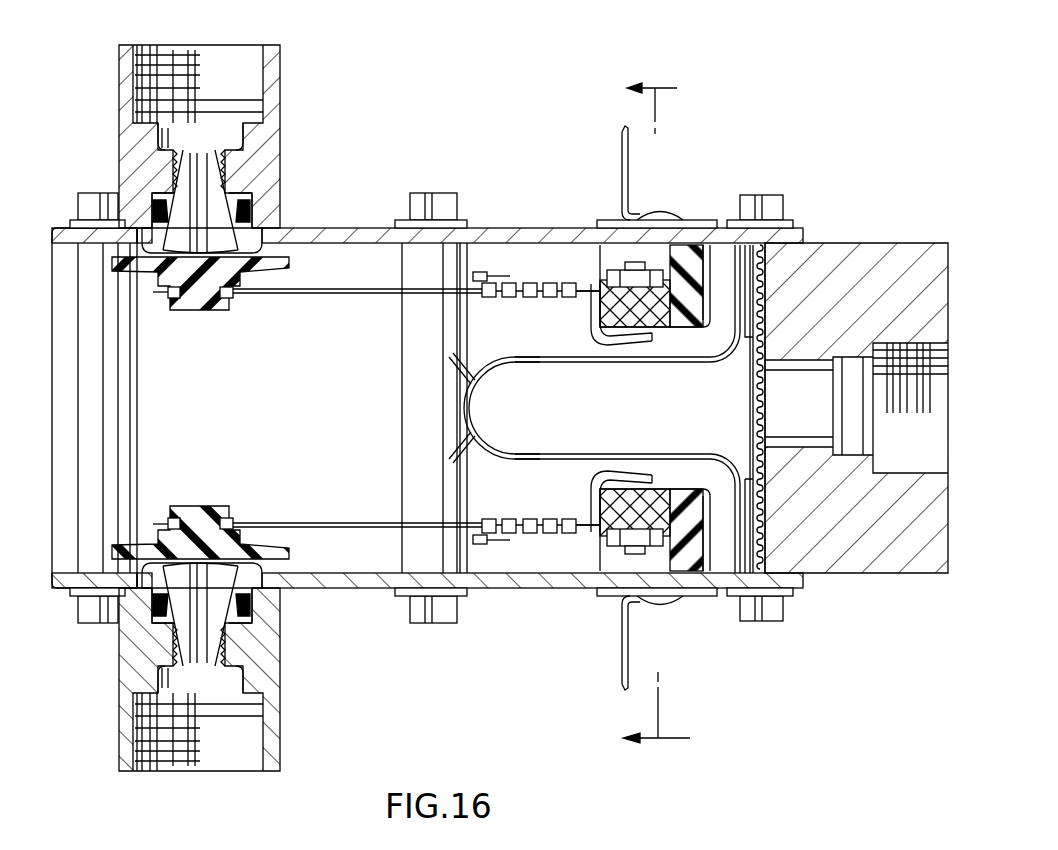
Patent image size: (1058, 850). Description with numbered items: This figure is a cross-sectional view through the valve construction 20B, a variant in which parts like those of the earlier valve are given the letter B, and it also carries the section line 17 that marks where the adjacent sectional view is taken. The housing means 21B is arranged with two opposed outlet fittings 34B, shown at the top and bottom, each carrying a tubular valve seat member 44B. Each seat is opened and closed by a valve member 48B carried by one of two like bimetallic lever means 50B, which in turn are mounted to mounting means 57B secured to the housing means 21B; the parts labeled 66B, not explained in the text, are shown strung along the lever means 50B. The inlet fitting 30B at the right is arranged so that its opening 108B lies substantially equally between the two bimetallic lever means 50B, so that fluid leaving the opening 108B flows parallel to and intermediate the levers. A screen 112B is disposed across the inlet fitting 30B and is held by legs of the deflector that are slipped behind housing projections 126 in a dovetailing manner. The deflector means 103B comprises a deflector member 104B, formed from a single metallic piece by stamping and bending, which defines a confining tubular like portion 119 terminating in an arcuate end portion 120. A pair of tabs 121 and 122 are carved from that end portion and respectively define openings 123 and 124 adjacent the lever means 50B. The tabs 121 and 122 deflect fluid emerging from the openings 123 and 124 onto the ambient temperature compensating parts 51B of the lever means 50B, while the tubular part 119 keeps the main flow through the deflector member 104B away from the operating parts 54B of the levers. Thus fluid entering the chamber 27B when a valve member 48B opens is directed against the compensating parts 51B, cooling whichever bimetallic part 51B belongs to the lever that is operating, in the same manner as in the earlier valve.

The valve construction 20B is at (806, 146).
The housing means 21B is at (353, 590).
The chamber 27B is at (285, 403).
The inlet fitting 30B is at (886, 250).
The outlet fittings 34B is at (276, 137).
The tubular valve seat members 44B is at (253, 220).
The valve members 48B is at (290, 266).
The bimetallic lever means 50B is at (362, 300).
The ambient temperature compensating parts 51B is at (283, 300).
The operating parts 54B is at (540, 283).
The mounting means 57B is at (694, 245).
The insulating beads 66B is at (532, 276).
The deflector means 103B is at (563, 343).
The deflector member 104B is at (562, 460).
The opening 108B is at (763, 388).
The screen 112B is at (772, 272).
The tubular like portion 119 is at (543, 364).
The arcuate end portion 120 is at (467, 405).
The tab 121 is at (457, 367).
The tab 122 is at (457, 436).
The opening 123 is at (493, 372).
The opening 124 is at (492, 452).
The housing projections 126 is at (745, 437).
The section line 17- 17 is at (642, 414).